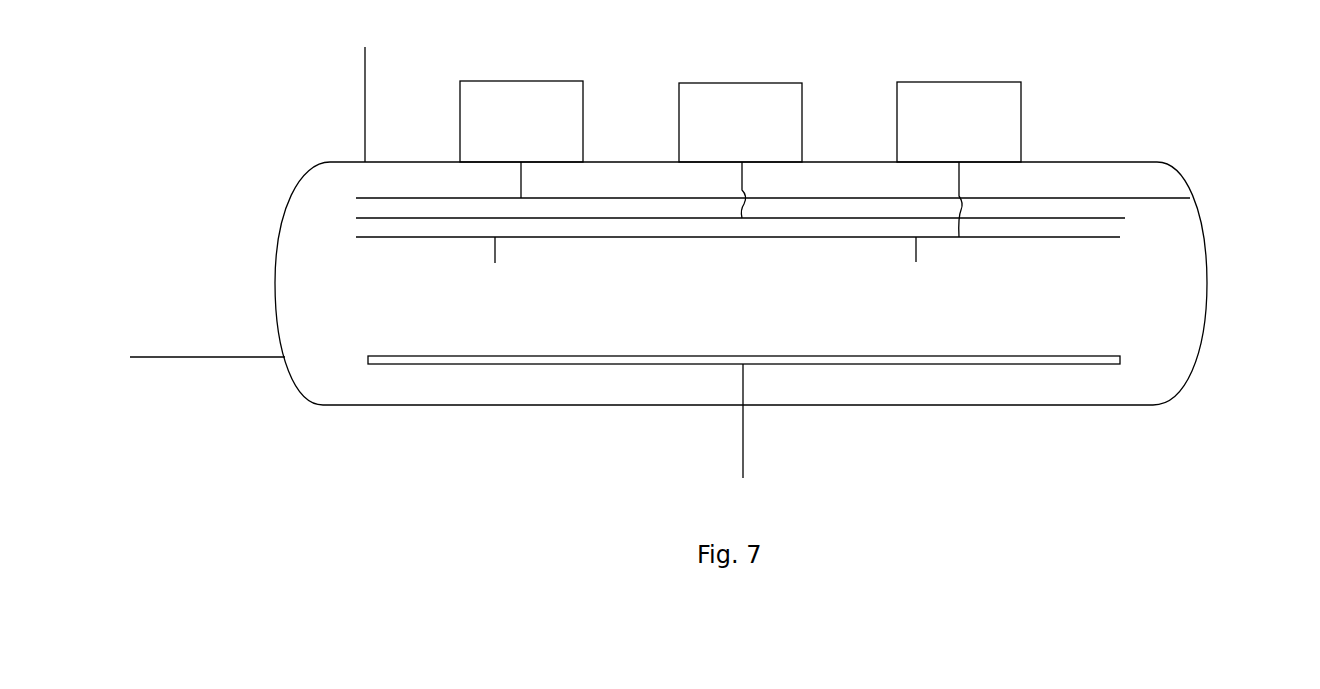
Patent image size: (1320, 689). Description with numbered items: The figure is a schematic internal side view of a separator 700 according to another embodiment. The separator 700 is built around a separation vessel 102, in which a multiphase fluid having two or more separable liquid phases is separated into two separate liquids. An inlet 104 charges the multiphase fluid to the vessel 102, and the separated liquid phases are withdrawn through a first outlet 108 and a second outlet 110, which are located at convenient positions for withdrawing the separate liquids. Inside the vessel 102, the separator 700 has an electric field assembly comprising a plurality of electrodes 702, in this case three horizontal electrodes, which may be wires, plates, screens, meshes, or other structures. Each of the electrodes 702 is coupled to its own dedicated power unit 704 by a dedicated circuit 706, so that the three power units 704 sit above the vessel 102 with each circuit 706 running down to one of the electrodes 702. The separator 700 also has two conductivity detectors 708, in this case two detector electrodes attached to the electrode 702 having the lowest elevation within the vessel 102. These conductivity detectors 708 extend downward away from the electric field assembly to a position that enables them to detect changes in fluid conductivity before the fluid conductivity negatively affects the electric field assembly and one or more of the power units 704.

The separator 700 is at (302, 71).
The separation vessel 102 is at (1188, 190).
The inlet 104 is at (744, 438).
The first outlet 108 is at (366, 120).
The second outlet 110 is at (200, 358).
The electrodes 702 is at (1120, 237).
The power unit 704 is at (545, 136).
The circuit 706 is at (518, 181).
The conductivity detectors 708 is at (914, 252).